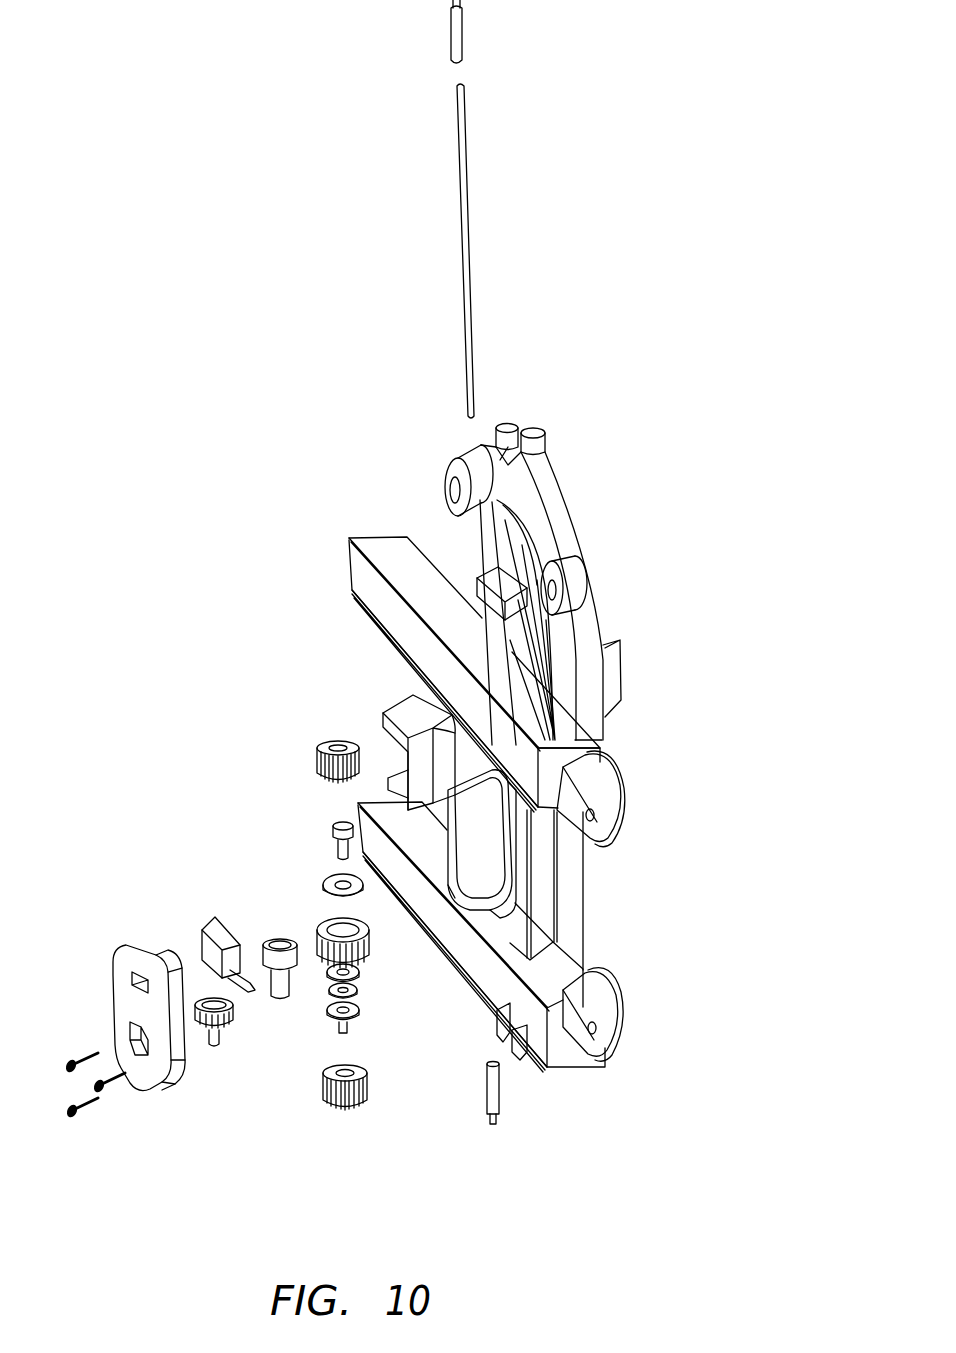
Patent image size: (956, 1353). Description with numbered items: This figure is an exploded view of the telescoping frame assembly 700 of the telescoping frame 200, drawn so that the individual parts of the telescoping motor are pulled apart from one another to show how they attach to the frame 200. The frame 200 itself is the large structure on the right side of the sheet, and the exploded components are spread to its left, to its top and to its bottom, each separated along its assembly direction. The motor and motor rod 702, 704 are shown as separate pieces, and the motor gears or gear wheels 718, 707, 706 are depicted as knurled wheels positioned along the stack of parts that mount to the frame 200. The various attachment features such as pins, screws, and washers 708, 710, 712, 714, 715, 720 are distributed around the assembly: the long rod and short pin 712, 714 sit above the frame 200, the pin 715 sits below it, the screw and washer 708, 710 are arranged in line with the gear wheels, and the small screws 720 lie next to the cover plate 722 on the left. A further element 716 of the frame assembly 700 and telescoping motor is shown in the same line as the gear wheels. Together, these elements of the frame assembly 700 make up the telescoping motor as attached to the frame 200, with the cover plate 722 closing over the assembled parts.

The telescoping frame assembly 700 is at (212, 332).
The telescoping frame 200 is at (597, 628).
The motor 702 is at (208, 918).
The motor rod 704 is at (273, 935).
The gear wheel 706 is at (320, 742).
The gear wheel 707 is at (345, 1102).
The attachment feature 708 is at (332, 826).
The attachment feature 710 is at (330, 875).
The attachment feature 712 is at (460, 195).
The attachment feature 714 is at (448, 32).
The attachment feature 715 is at (508, 1125).
The frame assembly element 716 is at (358, 1030).
The gear wheel 718 is at (214, 1046).
The attachment feature 720 is at (88, 1127).
The cover plate 722 is at (128, 943).